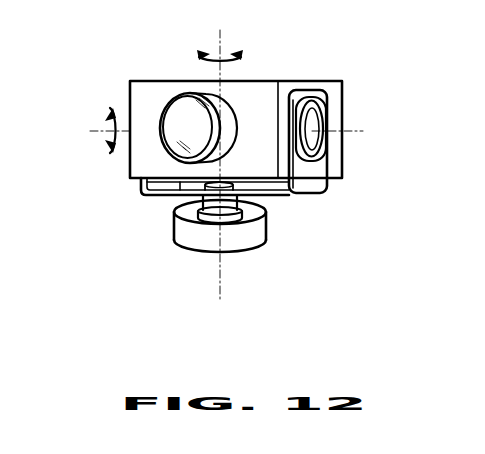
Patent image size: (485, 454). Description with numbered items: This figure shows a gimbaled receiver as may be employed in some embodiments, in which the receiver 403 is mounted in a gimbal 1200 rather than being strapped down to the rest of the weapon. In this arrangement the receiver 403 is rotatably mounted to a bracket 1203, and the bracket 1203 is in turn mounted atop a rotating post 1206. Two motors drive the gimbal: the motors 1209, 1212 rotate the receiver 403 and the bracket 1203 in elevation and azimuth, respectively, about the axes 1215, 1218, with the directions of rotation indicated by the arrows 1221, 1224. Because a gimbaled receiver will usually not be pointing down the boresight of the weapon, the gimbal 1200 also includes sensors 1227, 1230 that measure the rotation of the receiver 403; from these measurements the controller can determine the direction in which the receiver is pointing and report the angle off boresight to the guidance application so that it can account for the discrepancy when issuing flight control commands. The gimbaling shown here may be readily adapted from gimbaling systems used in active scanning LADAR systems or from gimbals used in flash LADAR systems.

The receiver 403 is at (342, 80).
The gimbal 1200 is at (124, 266).
The bracket 1203 is at (325, 195).
The rotating post 1206 is at (203, 200).
The motor 1209 is at (326, 118).
The motor 1212 is at (264, 238).
The axis 1215 is at (218, 283).
The axis 1218 is at (363, 131).
The arrow 1221 is at (112, 107).
The arrow 1224 is at (243, 58).
The sensor 1227 is at (323, 152).
The sensor 1230 is at (238, 213).